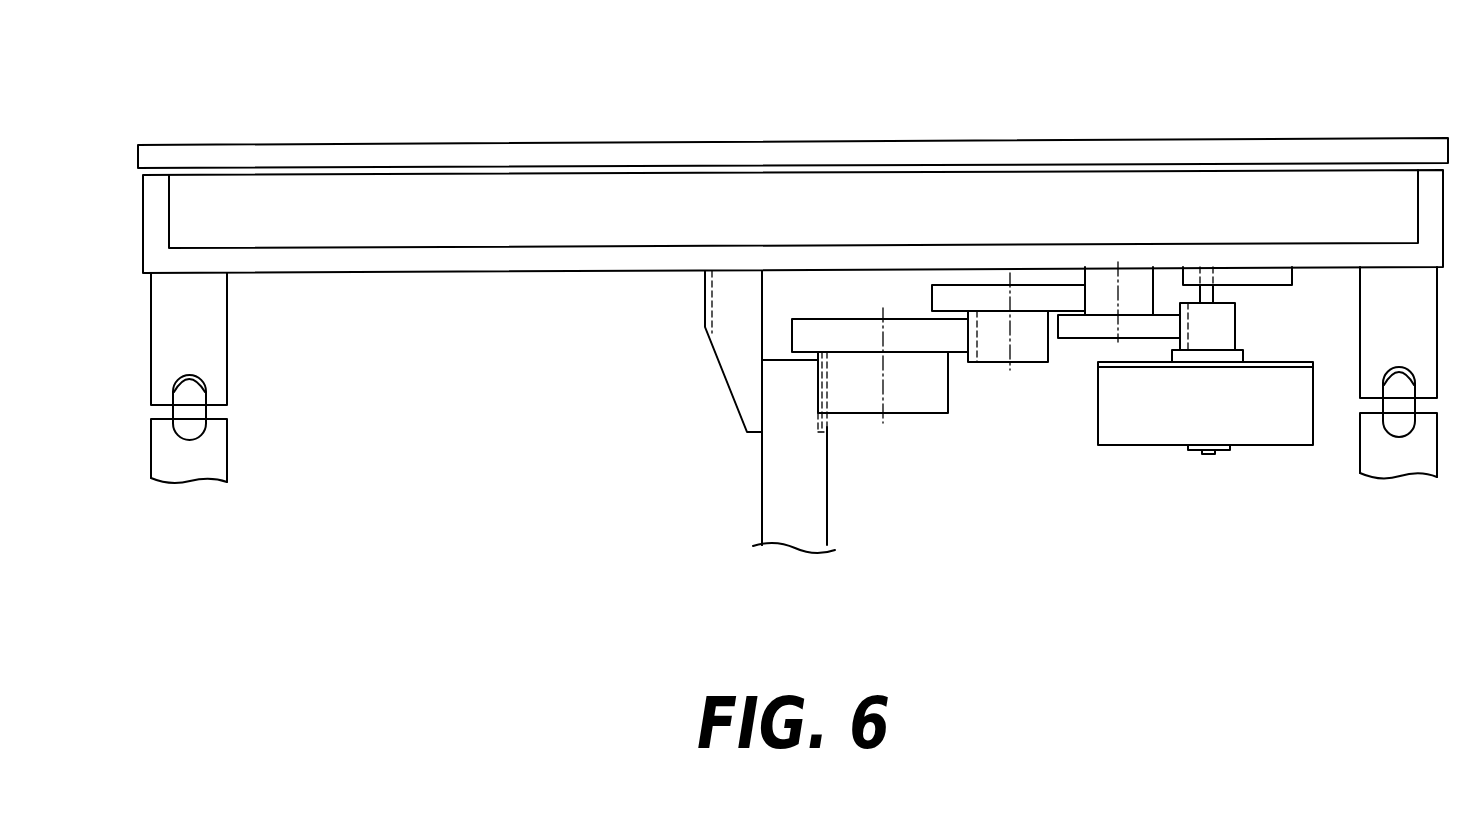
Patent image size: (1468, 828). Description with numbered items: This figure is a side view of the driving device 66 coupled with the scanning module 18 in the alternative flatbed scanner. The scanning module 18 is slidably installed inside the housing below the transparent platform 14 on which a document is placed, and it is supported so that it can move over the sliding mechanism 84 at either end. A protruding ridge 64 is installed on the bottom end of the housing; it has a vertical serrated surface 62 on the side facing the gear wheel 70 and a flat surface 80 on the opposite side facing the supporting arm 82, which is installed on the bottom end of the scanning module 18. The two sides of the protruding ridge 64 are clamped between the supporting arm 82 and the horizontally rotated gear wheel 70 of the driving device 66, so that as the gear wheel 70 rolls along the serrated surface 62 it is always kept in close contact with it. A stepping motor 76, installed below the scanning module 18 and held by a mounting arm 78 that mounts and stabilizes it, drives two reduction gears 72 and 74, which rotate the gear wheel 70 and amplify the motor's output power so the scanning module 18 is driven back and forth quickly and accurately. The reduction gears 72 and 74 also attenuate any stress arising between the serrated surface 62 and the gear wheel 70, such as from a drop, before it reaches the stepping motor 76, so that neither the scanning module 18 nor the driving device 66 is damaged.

The transparent platform 14 is at (427, 157).
The scanning module 18 is at (578, 190).
The vertical serrated surface 62 is at (823, 420).
The protruding ridge 64 is at (782, 527).
The driving device 66 is at (1022, 518).
The gear wheel 70 is at (910, 405).
The reduction gear 72 is at (995, 355).
The reduction gear 74 is at (1078, 328).
The stepping motor 76 is at (1267, 430).
The mounting arm 78 is at (1253, 282).
The flat surface 80 is at (762, 480).
The supporting arm 82 is at (737, 375).
The sliding mechanism 84 is at (266, 410).